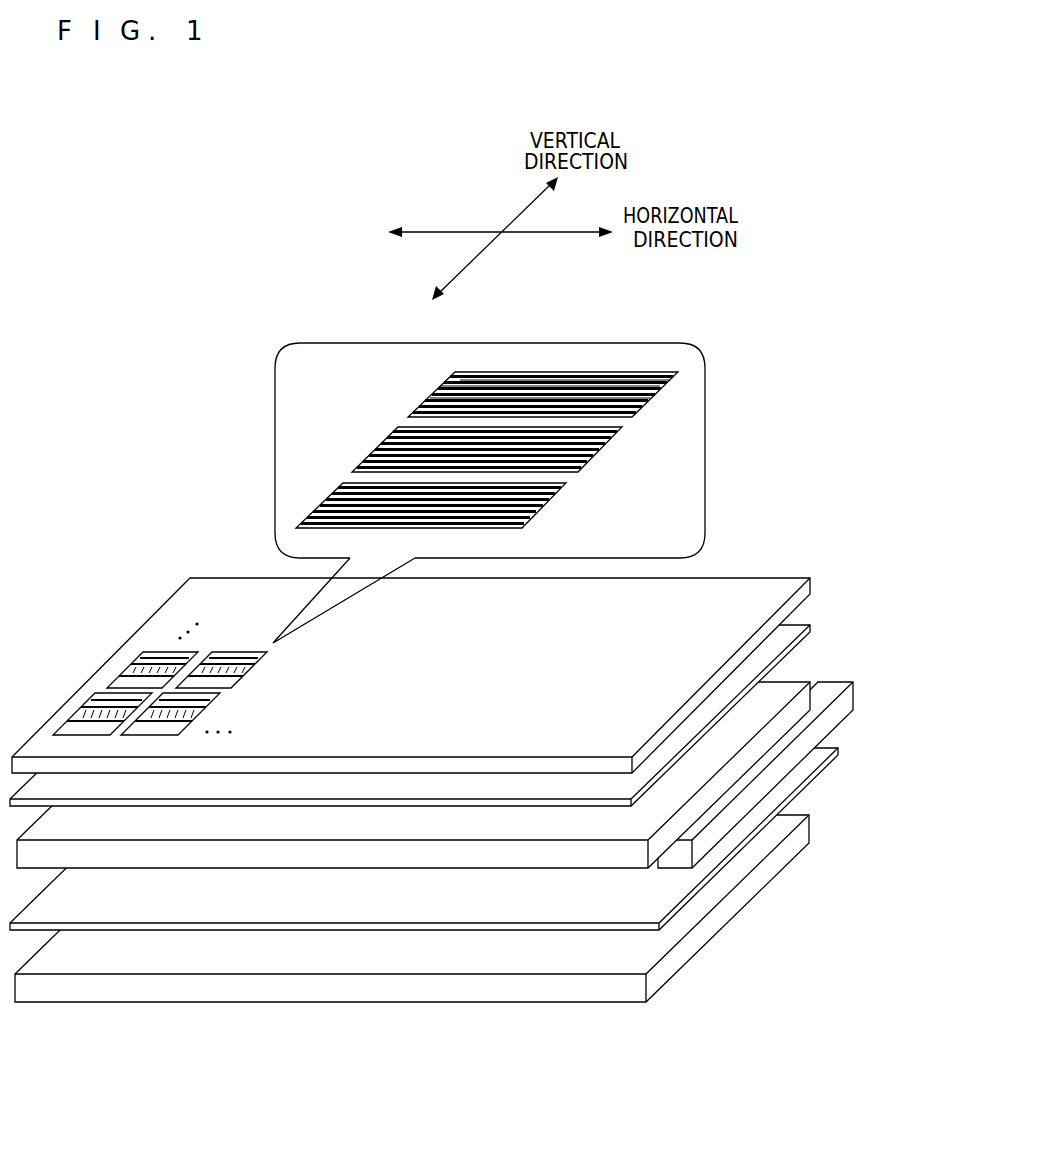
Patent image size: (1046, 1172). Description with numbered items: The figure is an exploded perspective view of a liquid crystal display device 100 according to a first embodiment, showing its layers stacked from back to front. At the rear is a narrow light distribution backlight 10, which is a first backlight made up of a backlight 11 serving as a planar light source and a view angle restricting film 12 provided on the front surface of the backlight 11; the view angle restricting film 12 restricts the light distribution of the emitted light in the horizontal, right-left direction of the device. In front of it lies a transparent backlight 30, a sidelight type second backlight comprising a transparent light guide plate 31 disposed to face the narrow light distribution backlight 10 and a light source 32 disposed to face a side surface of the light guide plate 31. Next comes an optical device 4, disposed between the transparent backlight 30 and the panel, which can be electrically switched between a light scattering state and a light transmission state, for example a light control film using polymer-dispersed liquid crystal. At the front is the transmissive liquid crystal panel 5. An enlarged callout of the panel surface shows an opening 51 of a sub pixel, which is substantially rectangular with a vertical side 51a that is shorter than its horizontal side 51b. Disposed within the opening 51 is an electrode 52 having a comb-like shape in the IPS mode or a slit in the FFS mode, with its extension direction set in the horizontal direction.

The liquid crystal display device 100 is at (865, 497).
The transmissive liquid crystal panel 5 is at (752, 590).
The optical device 4 is at (800, 622).
The transparent backlight 30 is at (466, 743).
The light guide plate 31 is at (797, 688).
The light source 32 is at (840, 688).
The narrow light distribution backlight 10 is at (463, 836).
The backlight 11 is at (747, 885).
The view angle restricting film 12 is at (792, 785).
The opening of the sub pixel 51 is at (417, 390).
The vertical side 51a is at (653, 402).
The horizontal side 51b is at (483, 372).
The electrode 52 is at (647, 385).